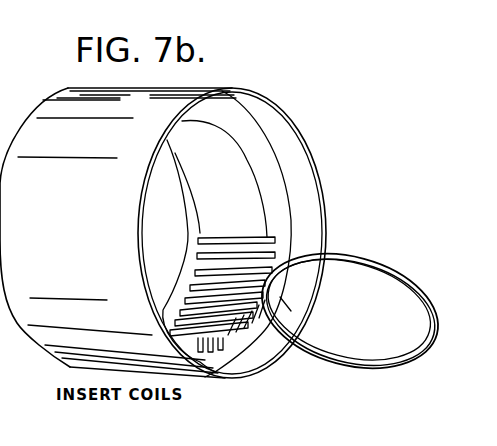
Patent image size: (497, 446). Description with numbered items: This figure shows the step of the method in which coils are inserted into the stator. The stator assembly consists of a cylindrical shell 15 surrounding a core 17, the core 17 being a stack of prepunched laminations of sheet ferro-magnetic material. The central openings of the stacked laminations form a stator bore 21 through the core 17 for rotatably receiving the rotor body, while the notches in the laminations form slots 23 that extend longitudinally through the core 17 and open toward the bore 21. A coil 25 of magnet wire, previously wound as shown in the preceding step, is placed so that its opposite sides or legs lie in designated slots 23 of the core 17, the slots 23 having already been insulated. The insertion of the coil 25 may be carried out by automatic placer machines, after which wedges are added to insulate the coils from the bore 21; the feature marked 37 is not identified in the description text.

The cylindrical shell 15 is at (143, 135).
The core 17 is at (257, 147).
The stator bore 21 is at (244, 198).
The slots 23 is at (270, 247).
The coil 25 is at (339, 360).
The end ring 37 is at (265, 125).